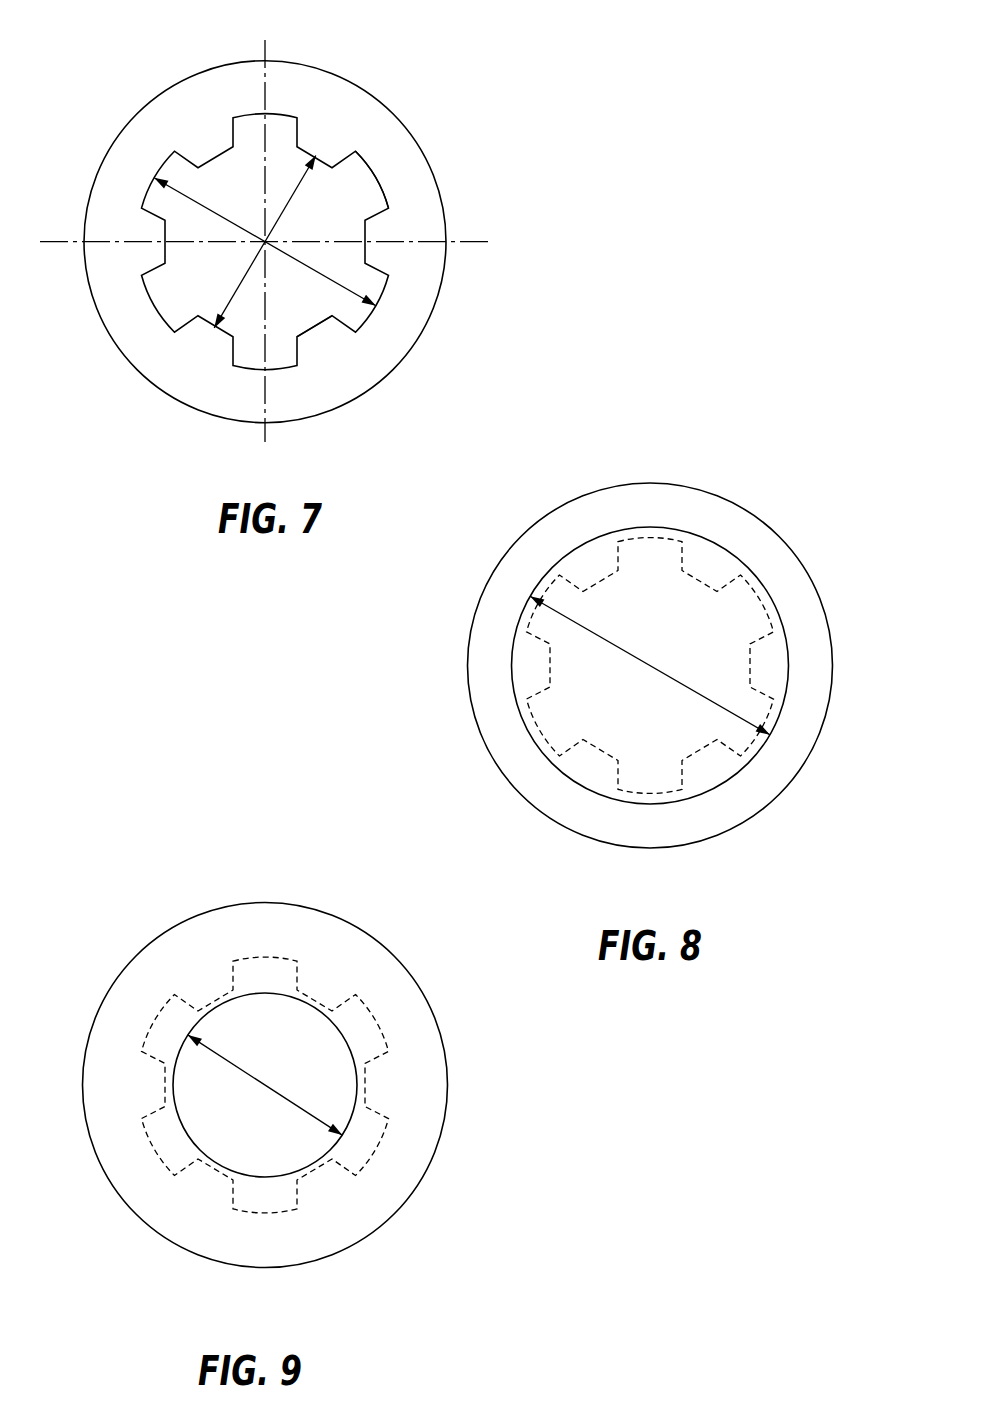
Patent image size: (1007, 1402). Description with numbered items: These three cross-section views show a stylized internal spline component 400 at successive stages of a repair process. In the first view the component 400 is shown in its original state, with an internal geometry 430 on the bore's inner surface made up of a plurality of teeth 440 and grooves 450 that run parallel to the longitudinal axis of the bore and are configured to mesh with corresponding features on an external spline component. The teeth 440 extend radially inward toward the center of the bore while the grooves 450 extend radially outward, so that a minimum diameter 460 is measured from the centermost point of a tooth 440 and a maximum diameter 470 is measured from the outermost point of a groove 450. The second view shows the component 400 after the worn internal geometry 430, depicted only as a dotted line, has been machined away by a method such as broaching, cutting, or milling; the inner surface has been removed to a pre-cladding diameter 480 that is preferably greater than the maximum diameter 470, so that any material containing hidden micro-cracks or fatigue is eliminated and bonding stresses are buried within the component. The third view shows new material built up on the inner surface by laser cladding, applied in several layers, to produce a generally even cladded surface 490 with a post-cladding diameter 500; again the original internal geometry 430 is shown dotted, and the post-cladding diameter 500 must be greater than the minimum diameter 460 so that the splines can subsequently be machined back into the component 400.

In FIG. 7, the internal spline component 400 is at (503, 63).
In FIG. 8, the internal spline component 400 is at (716, 429).
In FIG. 9, the internal spline component 400 is at (268, 865).
In FIG. 7, the internal geometry 430 is at (217, 148).
In FIG. 8, the internal geometry 430 is at (763, 599).
In FIG. 9, the internal geometry 430 is at (385, 1035).
In FIG. 7, the teeth 440 is at (315, 328).
In FIG. 7, the grooves 450 is at (377, 177).
In FIG. 7, the minimum diameter 460 is at (289, 202).
In FIG. 7, the maximum diameter 470 is at (322, 278).
In FIG. 8, the pre-cladding diameter 480 is at (651, 664).
In FIG. 9, the cladded surface 490 is at (345, 1038).
In FIG. 9, the post-cladding diameter 500 is at (267, 1082).